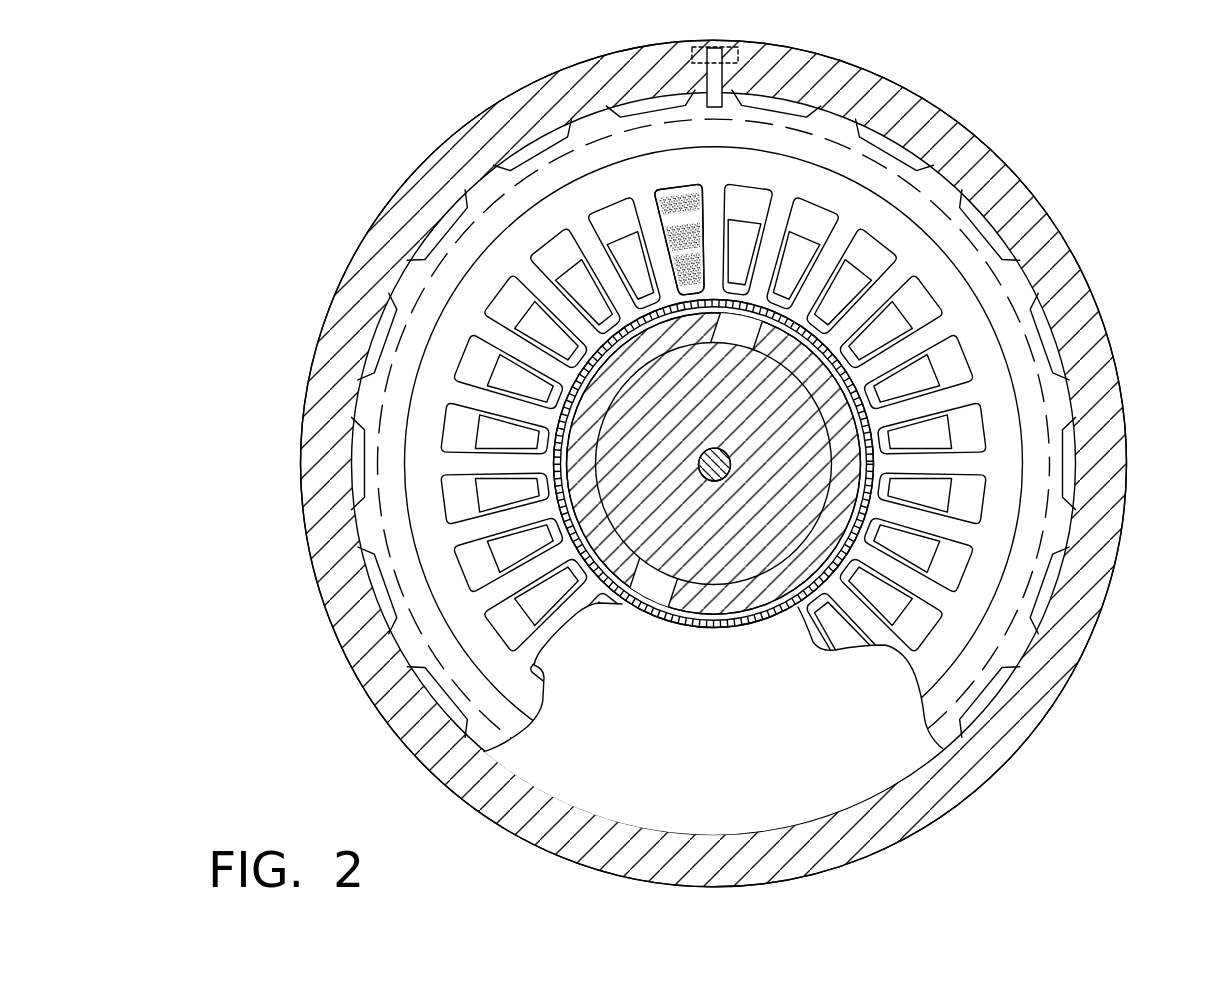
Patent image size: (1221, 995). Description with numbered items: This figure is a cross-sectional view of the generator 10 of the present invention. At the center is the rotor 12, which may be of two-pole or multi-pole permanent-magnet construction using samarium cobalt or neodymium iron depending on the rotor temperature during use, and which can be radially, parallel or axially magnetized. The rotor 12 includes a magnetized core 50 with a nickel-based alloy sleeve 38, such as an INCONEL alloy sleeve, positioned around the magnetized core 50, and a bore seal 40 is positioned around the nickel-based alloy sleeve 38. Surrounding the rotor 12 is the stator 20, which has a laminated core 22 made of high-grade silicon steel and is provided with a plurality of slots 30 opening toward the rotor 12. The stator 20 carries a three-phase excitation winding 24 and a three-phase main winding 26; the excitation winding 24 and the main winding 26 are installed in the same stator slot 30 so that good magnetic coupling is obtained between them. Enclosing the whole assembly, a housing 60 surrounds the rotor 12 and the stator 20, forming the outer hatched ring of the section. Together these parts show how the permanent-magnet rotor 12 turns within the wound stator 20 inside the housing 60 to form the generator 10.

The generator 10 is at (1080, 142).
The rotor 12 is at (612, 456).
The stator 20 is at (983, 343).
The laminated core 22 is at (1058, 521).
The three-phase excitation winding 24 is at (662, 198).
The three-phase main winding 26 is at (672, 270).
The slot 30 is at (687, 188).
The nickel-based alloy sleeve 38 is at (667, 623).
The bore seal 40 is at (727, 633).
The magnetized core 50 is at (763, 548).
The housing 60 is at (1118, 385).